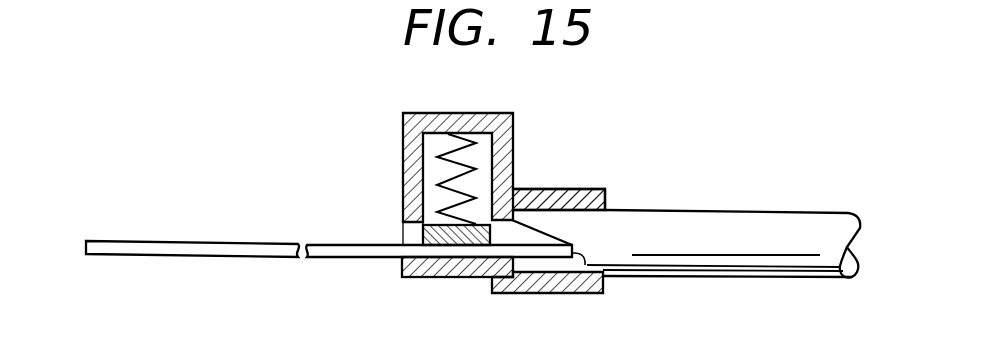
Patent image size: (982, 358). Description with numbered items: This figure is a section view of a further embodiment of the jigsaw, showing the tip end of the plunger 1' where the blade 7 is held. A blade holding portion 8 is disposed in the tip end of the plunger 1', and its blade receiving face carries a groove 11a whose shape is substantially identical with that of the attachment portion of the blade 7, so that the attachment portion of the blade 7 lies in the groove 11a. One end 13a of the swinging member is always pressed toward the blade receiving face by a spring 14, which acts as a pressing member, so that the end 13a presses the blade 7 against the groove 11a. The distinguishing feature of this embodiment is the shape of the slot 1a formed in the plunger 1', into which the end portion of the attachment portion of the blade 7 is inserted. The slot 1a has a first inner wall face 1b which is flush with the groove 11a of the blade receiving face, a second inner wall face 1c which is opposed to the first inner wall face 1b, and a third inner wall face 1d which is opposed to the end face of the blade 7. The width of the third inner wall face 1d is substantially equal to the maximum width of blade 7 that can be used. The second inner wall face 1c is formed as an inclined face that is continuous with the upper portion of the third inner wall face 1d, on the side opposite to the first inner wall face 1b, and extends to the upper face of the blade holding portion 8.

The blade holding portion 8 is at (443, 118).
The spring 14 is at (453, 177).
The one end of the swinging member 13a is at (423, 237).
The blade 7 is at (228, 250).
The slot 1a is at (530, 237).
The second inner wall face 1c is at (548, 238).
The plunger 1' is at (723, 213).
The groove 11a is at (443, 277).
The first inner wall face 1b is at (537, 263).
The third inner wall face 1d is at (577, 293).